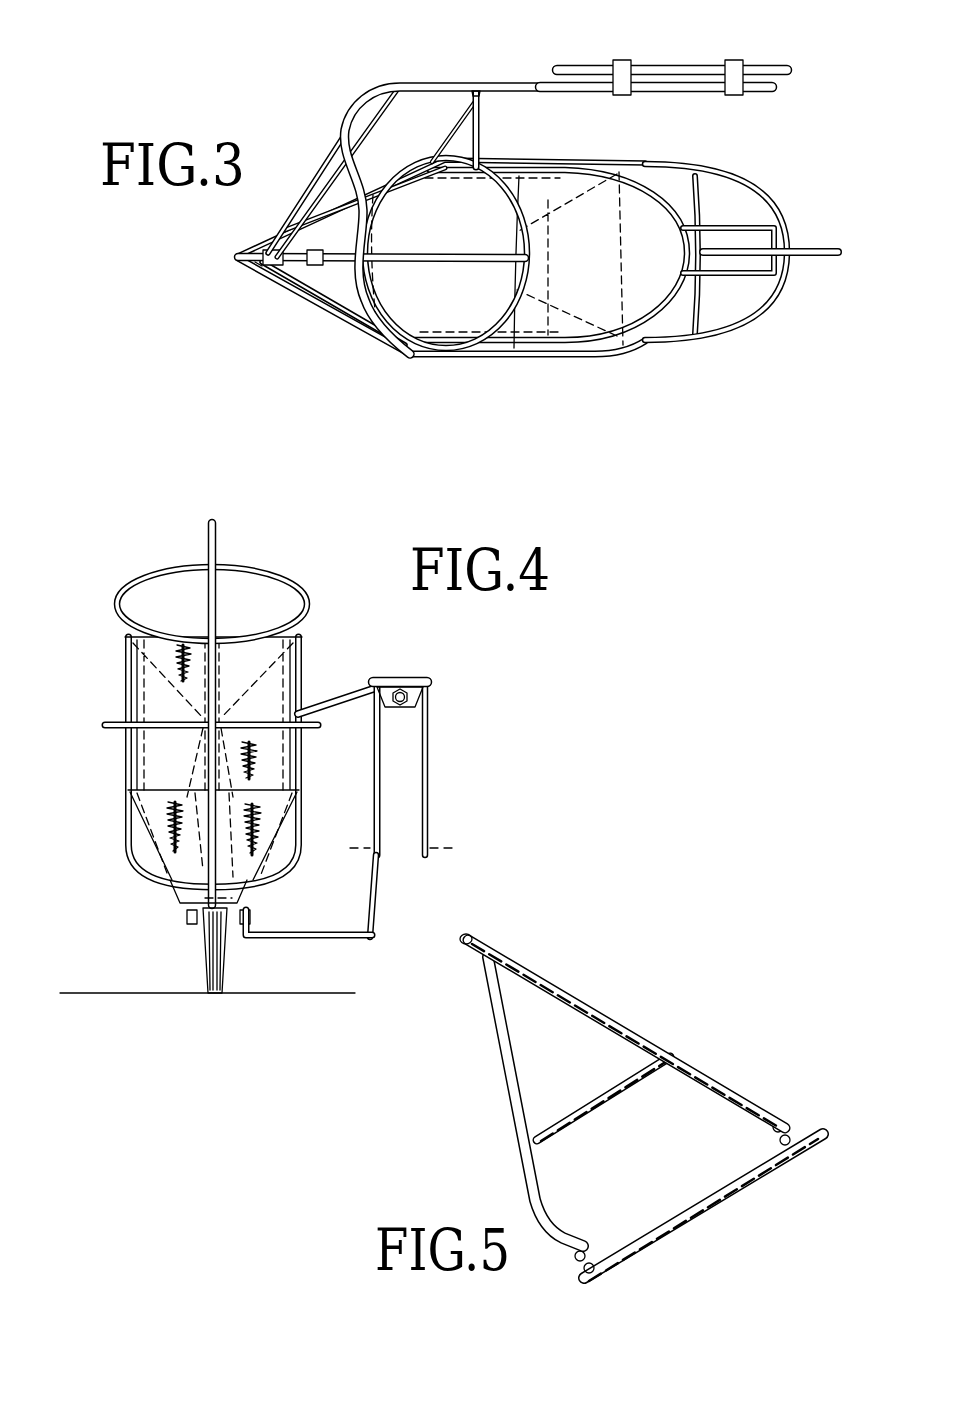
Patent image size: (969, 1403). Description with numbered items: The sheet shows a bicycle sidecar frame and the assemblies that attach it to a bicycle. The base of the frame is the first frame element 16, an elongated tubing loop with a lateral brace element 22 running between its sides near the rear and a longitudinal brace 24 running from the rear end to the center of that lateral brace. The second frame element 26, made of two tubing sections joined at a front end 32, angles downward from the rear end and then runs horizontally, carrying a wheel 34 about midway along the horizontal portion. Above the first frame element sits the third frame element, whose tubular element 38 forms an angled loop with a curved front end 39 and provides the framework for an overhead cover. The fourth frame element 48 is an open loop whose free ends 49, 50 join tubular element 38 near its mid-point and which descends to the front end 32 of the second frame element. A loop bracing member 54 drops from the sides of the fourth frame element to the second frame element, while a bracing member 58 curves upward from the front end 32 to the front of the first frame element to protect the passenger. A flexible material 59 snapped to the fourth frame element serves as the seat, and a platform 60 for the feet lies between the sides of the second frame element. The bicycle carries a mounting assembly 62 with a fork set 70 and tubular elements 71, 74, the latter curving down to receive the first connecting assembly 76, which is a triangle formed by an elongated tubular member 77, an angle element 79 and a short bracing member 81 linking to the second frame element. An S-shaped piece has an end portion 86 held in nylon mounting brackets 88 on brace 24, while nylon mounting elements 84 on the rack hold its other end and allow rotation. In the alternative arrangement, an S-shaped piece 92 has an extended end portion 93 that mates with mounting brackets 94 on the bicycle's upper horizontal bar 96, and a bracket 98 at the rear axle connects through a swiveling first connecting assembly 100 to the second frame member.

In FIG. 3, the first frame element 16 is at (684, 193).
In FIG. 4, the first frame element 16 is at (108, 726).
In FIG. 3, the lateral brace element 22 is at (360, 306).
In FIG. 3, the longitudinal brace 24 is at (335, 263).
In FIG. 5, the second frame element 26 is at (748, 1182).
In FIG. 4, the front end of second frame element 32 is at (206, 899).
In FIG. 4, the wheel 34 is at (211, 996).
In FIG. 3, the tubular element 38 is at (381, 338).
In FIG. 4, the tubular element 38 is at (305, 600).
In FIG. 3, the front end of third frame element 39 is at (541, 300).
In FIG. 3, the fourth frame element 48 is at (760, 178).
In FIG. 4, the fourth frame element 48 is at (301, 852).
In FIG. 3, the free end of loop 49 is at (407, 348).
In FIG. 4, the free end of loop 49 is at (125, 638).
In FIG. 4, the free end of loop 50 is at (301, 640).
In FIG. 4, the loop bracing member 54 is at (145, 846).
In FIG. 3, the bracing member 58 is at (837, 260).
In FIG. 4, the bracing member 58 is at (224, 784).
In FIG. 3, the flexible material 59 is at (618, 346).
In FIG. 4, the flexible material 59 is at (140, 769).
In FIG. 3, the platform 60 is at (760, 267).
In FIG. 4, the mounting assembly 62 is at (430, 663).
In FIG. 4, the fork set 70 is at (374, 778).
In FIG. 4, the tubular element 71 is at (431, 768).
In FIG. 4, the tubular element 74 is at (379, 880).
In FIG. 4, the first connecting assembly 76 is at (350, 948).
In FIG. 5, the first connecting assembly 76 is at (608, 992).
In FIG. 5, the elongated tubular member 77 is at (707, 1073).
In FIG. 5, the angle element 79 is at (510, 1073).
In FIG. 5, the short bracing member 81 is at (630, 1090).
In FIG. 4, the nylon mounting elements 84 is at (420, 698).
In FIG. 3, the end portion of S-shaped piece 86 is at (297, 268).
In FIG. 3, the nylon mounting brackets 88 is at (318, 270).
In FIG. 3, the S-shaped piece 92 is at (362, 80).
In FIG. 3, the end portion of S-shaped piece 93 is at (684, 92).
In FIG. 3, the mounting brackets 94 is at (627, 60).
In FIG. 3, the upper horizontal bar 96 is at (673, 63).
In FIG. 3, the bracket 98 is at (479, 93).
In FIG. 3, the first connecting assembly 100 is at (482, 124).